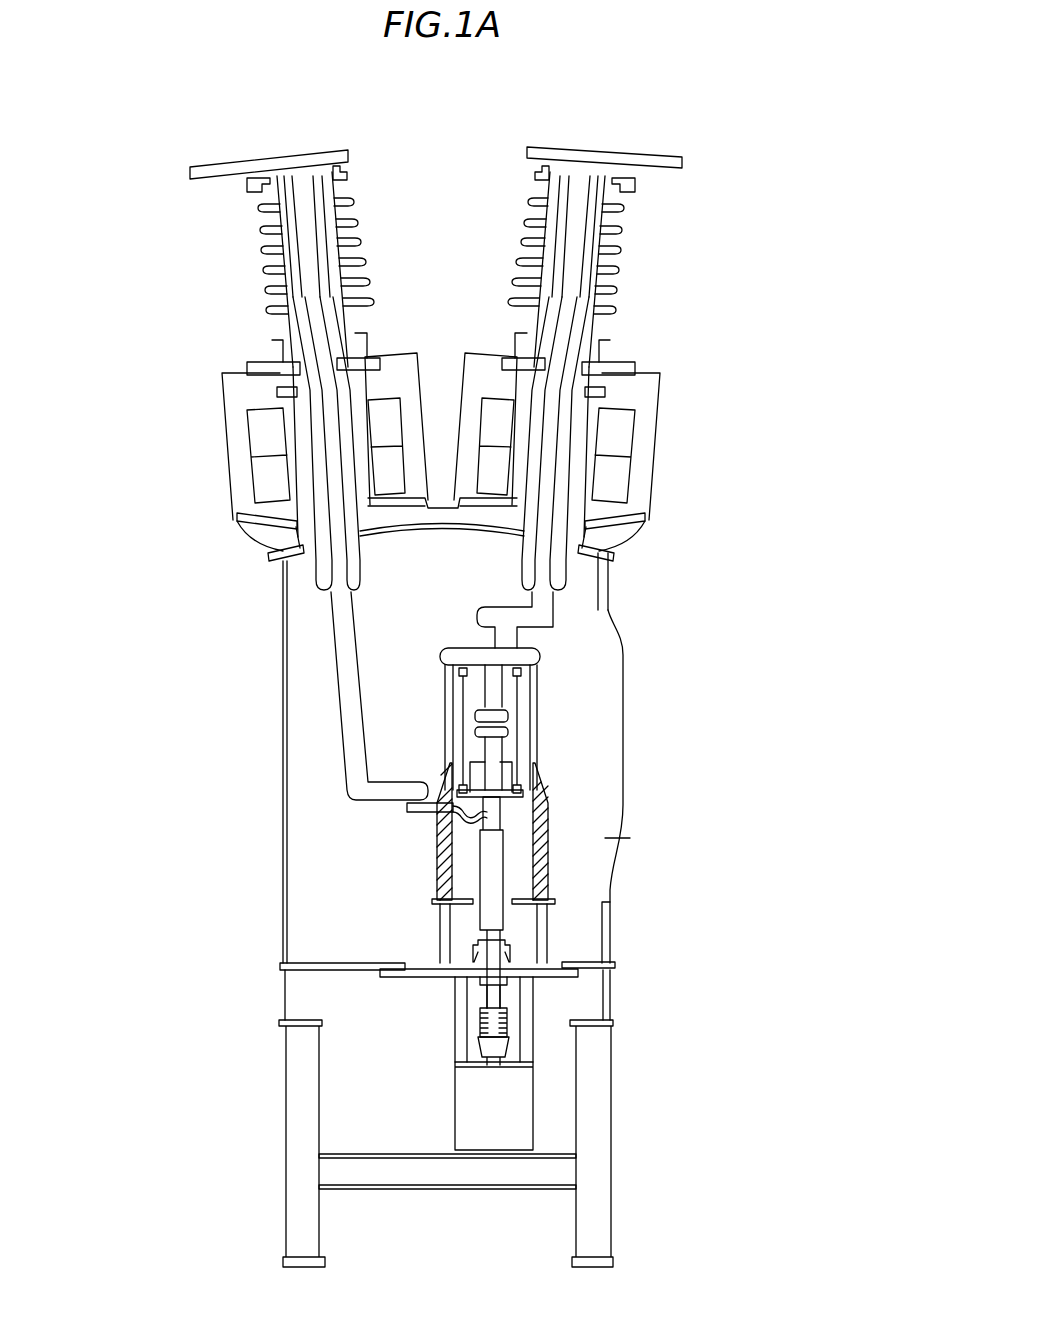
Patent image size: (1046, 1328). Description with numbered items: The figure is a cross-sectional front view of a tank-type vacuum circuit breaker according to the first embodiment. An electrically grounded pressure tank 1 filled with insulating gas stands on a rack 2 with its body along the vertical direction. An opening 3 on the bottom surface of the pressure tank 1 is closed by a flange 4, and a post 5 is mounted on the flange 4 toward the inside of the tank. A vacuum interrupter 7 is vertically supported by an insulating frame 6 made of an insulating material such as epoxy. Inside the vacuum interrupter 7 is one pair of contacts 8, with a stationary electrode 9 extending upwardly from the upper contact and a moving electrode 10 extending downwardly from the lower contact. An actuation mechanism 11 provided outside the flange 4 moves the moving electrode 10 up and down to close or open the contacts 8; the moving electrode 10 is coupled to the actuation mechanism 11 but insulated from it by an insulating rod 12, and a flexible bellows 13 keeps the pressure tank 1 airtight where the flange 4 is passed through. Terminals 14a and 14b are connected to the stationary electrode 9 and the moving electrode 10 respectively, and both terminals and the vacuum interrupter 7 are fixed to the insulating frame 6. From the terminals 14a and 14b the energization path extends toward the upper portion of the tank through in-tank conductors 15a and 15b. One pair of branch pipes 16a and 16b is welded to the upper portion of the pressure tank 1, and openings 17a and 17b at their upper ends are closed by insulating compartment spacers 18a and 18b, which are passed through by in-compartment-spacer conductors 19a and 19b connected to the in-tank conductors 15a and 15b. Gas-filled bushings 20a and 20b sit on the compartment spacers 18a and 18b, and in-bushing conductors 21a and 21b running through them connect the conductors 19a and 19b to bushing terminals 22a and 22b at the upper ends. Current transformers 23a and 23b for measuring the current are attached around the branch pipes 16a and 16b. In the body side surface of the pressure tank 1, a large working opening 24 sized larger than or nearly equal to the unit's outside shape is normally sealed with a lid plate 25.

The pressure tank 1 is at (282, 710).
The rack 2 is at (288, 1142).
The opening 3 is at (427, 960).
The flange 4 is at (427, 975).
The post 5 is at (437, 922).
The insulating frame 6 is at (437, 865).
The vacuum interrupter 7 is at (627, 803).
The contacts 8 is at (500, 727).
The stationary electrode 9 is at (500, 697).
The moving electrode 10 is at (500, 750).
The actuation mechanism 11 is at (535, 1115).
The insulating rod 12 is at (553, 897).
The flexible bellows 13 is at (510, 958).
The terminal 14a is at (540, 653).
The terminal 14b is at (437, 813).
The in-tank conductor 15a is at (557, 617).
The in-tank conductor 15b is at (353, 768).
The branch pipe 16a is at (592, 490).
The branch pipe 16b is at (278, 540).
The opening 17a is at (600, 387).
The opening 17b is at (277, 397).
The compartment spacer 18a is at (580, 342).
The compartment spacer 18b is at (303, 348).
The in-compartment-spacer conductor 19a is at (557, 441).
The in-compartment-spacer conductor 19b is at (330, 428).
The bushing 20a is at (620, 285).
The bushing 20b is at (273, 274).
The in-bushing conductor 21a is at (580, 233).
The in-bushing conductor 21b is at (277, 232).
The bushing terminal 22a is at (625, 152).
The bushing terminal 22b is at (237, 160).
The current transformer 23a is at (628, 465).
The current transformer 23b is at (253, 472).
The working opening 24 is at (605, 838).
The lid plate 25 is at (618, 880).